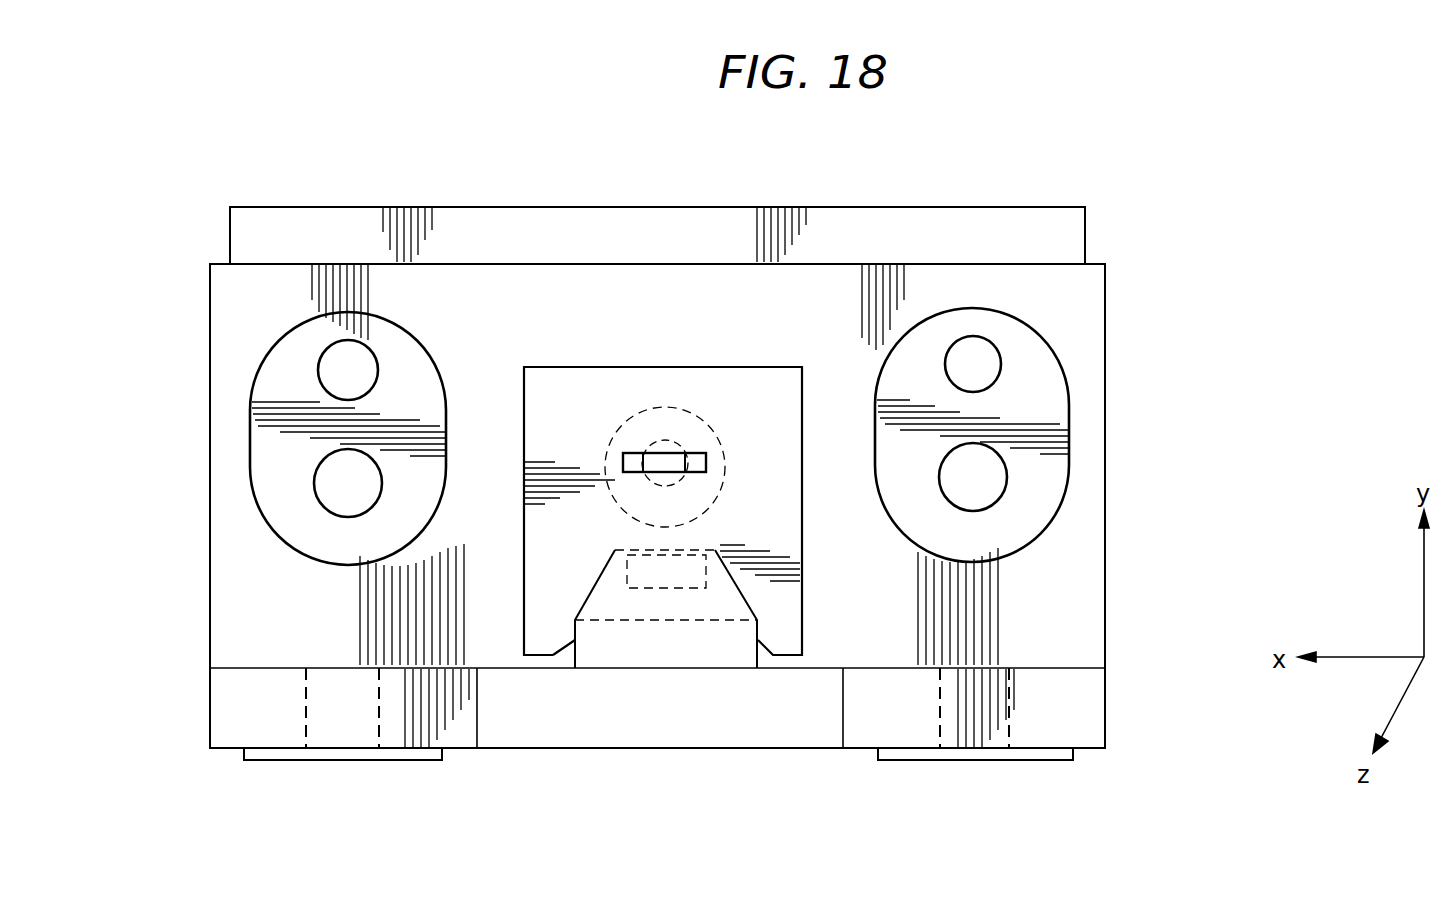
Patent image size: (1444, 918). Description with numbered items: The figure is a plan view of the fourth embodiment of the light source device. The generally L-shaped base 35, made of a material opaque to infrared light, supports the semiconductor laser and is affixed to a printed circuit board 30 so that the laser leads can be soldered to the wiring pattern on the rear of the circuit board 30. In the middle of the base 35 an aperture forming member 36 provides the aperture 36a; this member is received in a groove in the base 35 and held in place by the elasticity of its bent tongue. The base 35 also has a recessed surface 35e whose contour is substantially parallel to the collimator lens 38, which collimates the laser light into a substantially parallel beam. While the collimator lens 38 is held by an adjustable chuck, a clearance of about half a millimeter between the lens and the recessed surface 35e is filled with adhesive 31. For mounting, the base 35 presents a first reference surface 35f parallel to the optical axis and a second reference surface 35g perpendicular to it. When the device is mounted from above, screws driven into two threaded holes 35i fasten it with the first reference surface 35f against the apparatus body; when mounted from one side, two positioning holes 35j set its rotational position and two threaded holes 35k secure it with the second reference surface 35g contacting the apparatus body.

The printed circuit board 30 is at (500, 207).
The adhesive 31 is at (665, 527).
The base 35 is at (210, 285).
The recessed surface 35e is at (685, 540).
The first reference surface 35f is at (275, 762).
The second reference surface 35g is at (280, 390).
The threaded holes 35i is at (306, 715).
The positioning holes 35j is at (333, 348).
The threaded holes 35k is at (317, 495).
The aperture forming member 36 is at (627, 367).
The aperture 36a is at (633, 453).
The collimator lens 38 is at (705, 415).